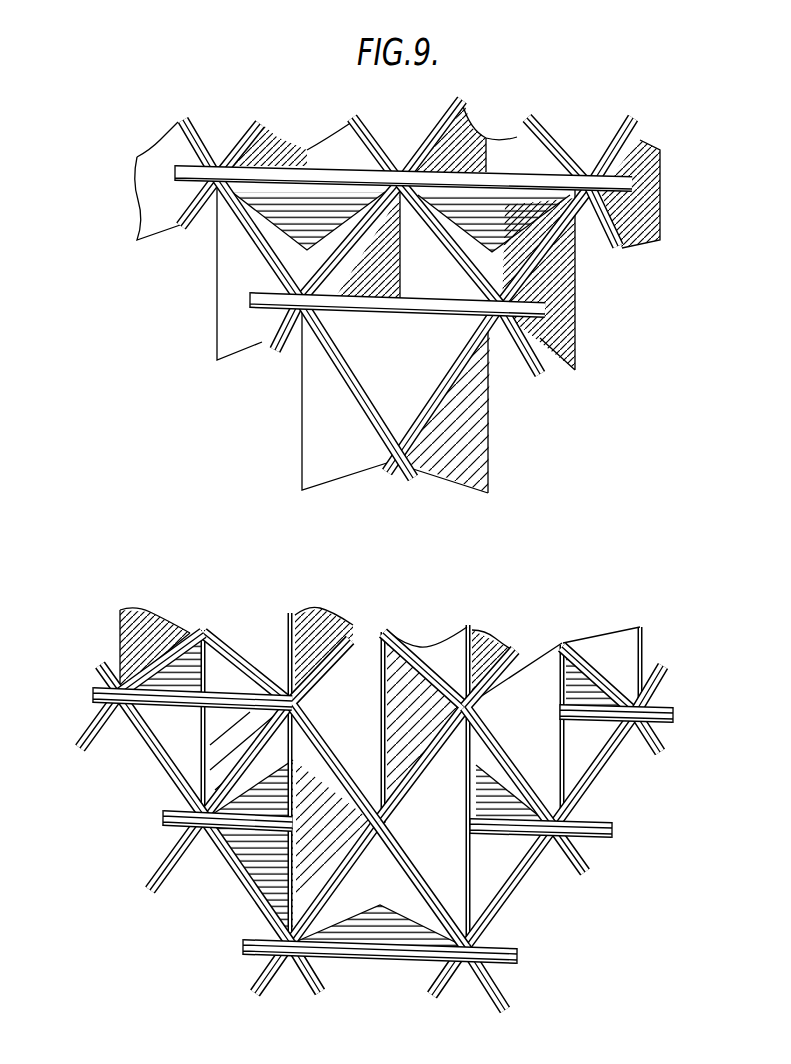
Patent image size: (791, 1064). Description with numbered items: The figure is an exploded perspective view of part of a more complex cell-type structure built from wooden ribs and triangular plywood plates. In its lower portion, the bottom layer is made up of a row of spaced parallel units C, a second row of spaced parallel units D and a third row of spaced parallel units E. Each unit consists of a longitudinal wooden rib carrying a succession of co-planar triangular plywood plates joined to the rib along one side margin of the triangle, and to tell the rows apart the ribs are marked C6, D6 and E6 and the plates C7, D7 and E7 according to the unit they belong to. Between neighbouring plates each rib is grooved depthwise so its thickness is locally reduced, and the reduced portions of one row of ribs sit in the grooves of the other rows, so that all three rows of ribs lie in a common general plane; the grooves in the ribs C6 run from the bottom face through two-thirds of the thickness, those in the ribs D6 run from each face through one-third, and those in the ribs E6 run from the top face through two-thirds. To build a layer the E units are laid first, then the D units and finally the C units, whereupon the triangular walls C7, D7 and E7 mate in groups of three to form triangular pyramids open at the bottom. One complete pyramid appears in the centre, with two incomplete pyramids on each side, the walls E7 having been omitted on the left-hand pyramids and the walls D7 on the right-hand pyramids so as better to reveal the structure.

The units of the first row C is at (546, 376).
The units of the second row D is at (182, 231).
The units of the third row E is at (639, 188).
The rib of C unit C6 is at (660, 707).
The rib of D unit D6 is at (100, 712).
The rib of E unit E6 is at (262, 897).
The triangular plate of C unit C7 is at (345, 142).
The triangular plate of D unit D7 is at (378, 277).
The triangular plate of E unit E7 is at (432, 338).